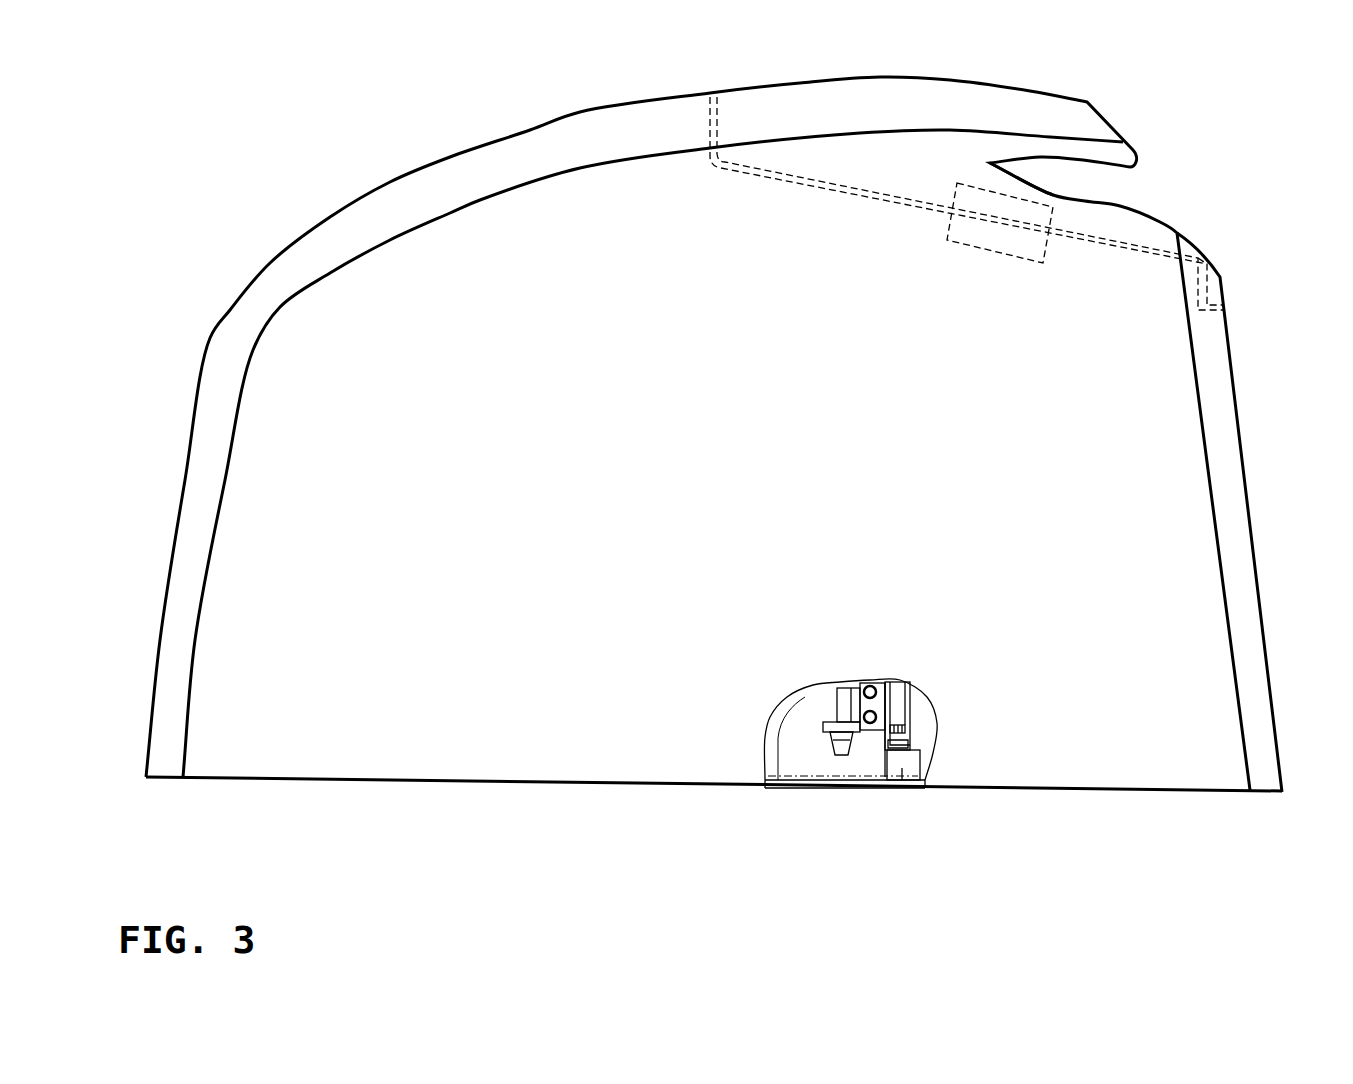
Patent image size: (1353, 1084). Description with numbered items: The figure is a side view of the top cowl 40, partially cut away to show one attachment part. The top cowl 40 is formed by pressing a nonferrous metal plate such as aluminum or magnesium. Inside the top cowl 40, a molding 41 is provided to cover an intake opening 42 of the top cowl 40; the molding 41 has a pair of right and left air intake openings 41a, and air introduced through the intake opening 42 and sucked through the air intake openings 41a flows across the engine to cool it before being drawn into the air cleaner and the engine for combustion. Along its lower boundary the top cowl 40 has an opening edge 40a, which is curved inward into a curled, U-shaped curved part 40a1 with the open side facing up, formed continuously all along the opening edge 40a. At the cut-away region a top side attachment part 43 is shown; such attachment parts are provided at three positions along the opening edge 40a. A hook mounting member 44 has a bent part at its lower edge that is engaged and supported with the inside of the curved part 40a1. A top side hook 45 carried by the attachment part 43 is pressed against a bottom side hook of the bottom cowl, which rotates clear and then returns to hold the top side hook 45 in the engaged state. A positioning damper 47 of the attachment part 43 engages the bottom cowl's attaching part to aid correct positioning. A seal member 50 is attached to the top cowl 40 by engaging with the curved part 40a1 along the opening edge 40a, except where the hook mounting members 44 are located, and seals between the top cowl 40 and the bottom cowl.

The top cowl 40 is at (402, 165).
The opening edge 40a is at (670, 786).
The curved part 40a1 is at (838, 788).
The molding 41 is at (825, 184).
The air intake opening 41a is at (982, 250).
The intake opening 42 is at (1115, 183).
The top side attachment part 43 is at (835, 673).
The hook mounting member 44 is at (902, 770).
The top side hook 45 is at (910, 747).
The positioning damper 47 is at (835, 744).
The seal member 50 is at (783, 722).